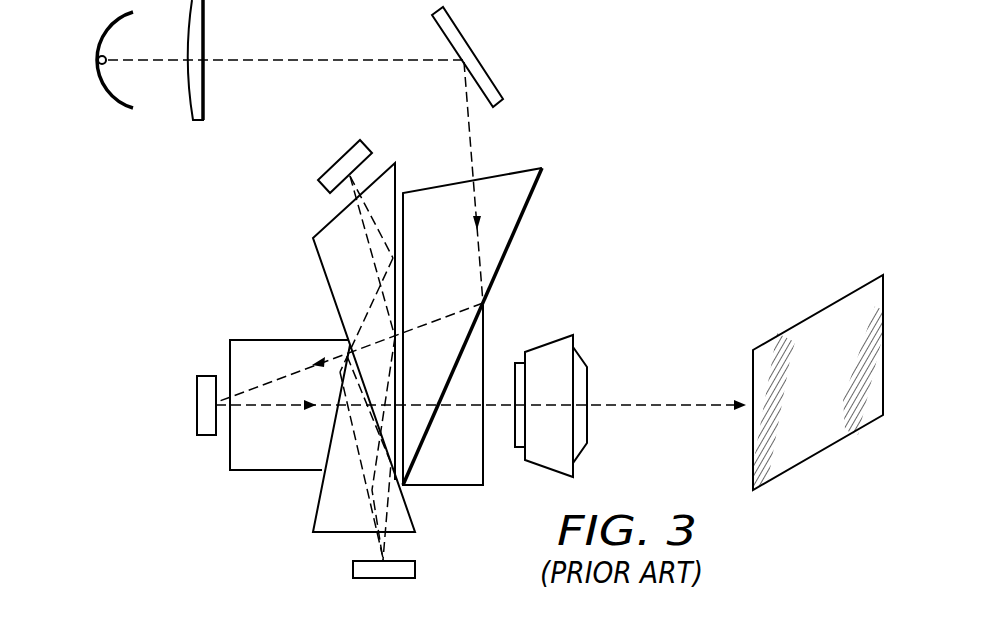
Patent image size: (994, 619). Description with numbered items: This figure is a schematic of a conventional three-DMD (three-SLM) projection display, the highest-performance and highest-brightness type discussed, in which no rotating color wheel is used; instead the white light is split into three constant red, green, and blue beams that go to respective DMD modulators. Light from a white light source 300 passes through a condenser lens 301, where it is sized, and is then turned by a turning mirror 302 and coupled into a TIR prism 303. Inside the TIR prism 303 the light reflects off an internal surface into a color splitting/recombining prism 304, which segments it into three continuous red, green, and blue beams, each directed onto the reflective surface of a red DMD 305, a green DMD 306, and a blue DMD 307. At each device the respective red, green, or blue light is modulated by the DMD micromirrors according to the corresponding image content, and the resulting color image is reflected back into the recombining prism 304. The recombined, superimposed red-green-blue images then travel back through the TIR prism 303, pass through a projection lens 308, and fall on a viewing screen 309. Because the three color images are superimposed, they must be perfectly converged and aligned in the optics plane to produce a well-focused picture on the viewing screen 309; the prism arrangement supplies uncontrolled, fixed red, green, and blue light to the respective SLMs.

The white light source 300 is at (106, 32).
The condenser lens 301 is at (203, 25).
The turning mirror 302 is at (465, 42).
The TIR prism 303 is at (523, 217).
The color splitting/recombining prism 304 is at (320, 472).
The red DMD 305 is at (415, 570).
The green DMD 306 is at (197, 417).
The blue DMD 307 is at (338, 157).
The projection lens 308 is at (588, 427).
The viewing screen 309 is at (808, 442).